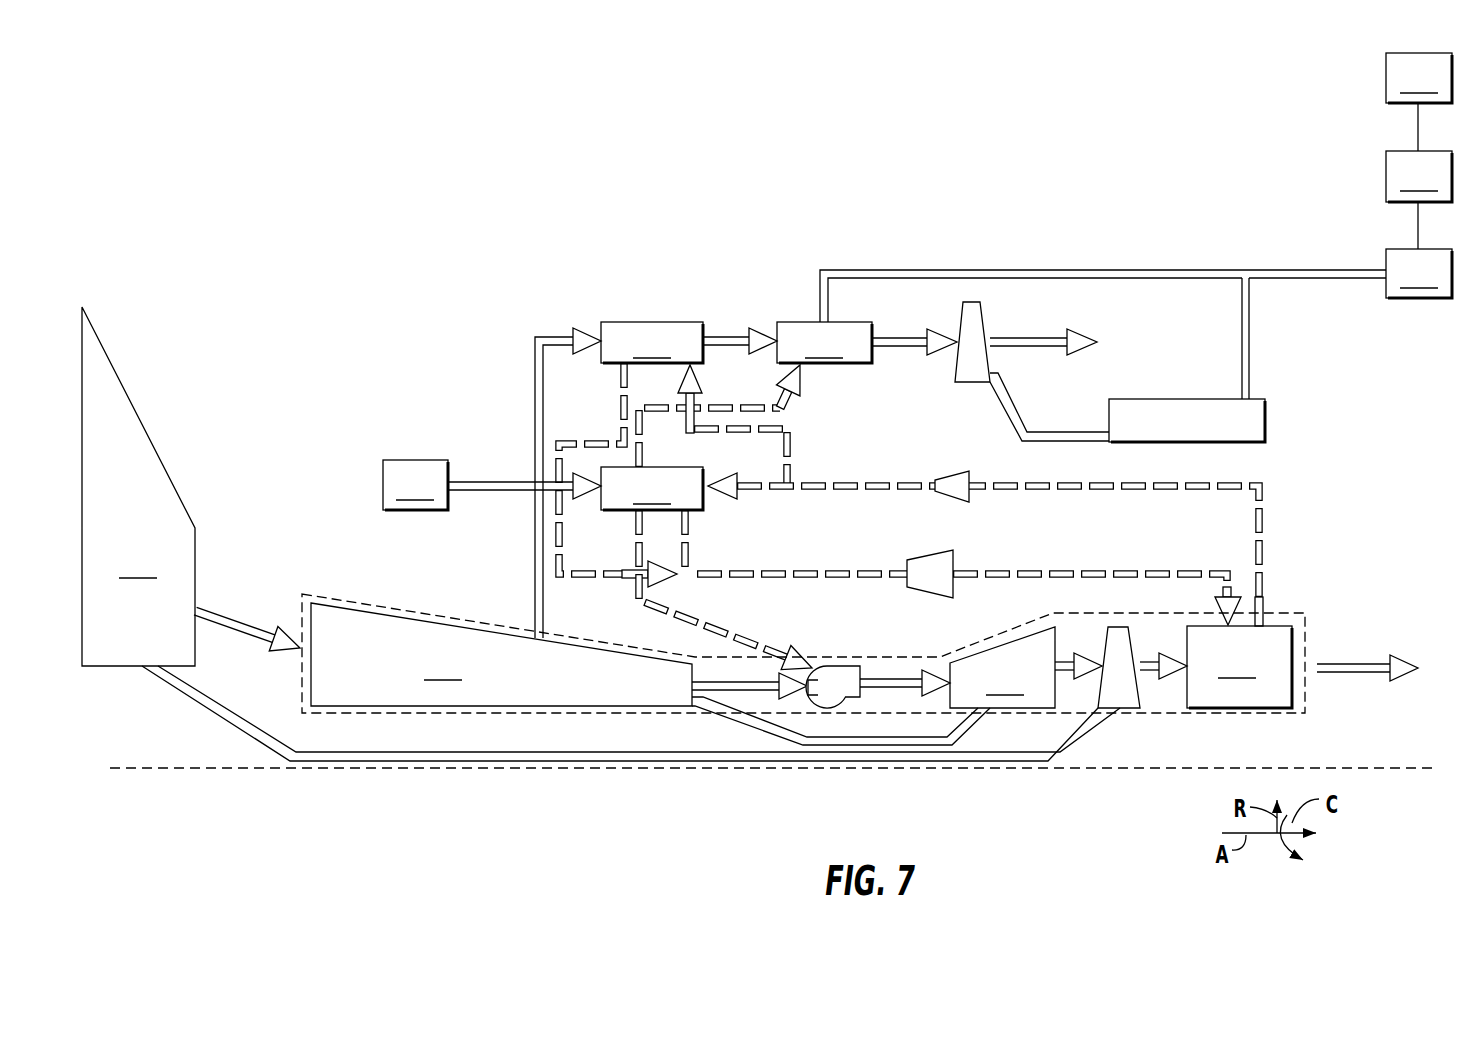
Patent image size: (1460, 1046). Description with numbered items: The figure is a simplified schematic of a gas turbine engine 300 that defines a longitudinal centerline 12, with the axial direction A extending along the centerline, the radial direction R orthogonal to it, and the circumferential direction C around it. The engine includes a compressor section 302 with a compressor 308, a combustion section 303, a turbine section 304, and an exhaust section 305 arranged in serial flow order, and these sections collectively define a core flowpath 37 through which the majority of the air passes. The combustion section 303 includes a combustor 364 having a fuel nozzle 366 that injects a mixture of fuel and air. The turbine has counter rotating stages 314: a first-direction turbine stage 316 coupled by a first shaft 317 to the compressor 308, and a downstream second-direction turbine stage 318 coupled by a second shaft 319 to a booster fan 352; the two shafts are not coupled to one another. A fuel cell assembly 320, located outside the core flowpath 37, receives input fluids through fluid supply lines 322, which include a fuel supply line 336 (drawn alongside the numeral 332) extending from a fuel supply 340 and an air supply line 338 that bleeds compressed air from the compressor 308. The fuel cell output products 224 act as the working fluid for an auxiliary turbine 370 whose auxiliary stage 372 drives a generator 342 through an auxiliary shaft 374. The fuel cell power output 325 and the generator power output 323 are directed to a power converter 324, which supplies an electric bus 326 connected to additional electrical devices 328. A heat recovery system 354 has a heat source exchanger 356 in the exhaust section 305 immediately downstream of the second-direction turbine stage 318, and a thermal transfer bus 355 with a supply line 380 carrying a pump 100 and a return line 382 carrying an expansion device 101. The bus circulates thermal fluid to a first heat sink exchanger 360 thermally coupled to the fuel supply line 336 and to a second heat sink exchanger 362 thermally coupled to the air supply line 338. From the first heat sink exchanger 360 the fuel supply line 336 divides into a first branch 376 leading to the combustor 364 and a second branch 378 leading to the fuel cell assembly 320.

The longitudinal centerline 12 is at (197, 770).
The core flowpath 37 is at (338, 597).
The pump 100 is at (955, 472).
The expansion device 101 is at (930, 559).
The output products 224 is at (897, 350).
The gas turbine engine 300 is at (1153, 82).
The compressor section 302 is at (501, 613).
The combustion section 303 is at (838, 638).
The turbine section 304 is at (1085, 763).
The exhaust section 305 is at (1314, 686).
The compressor 308 is at (471, 600).
The counter rotating stages 314 is at (1021, 738).
The first-direction turbine stage 316 is at (981, 667).
The first shaft 317 is at (877, 746).
The second-direction turbine stage 318 is at (1123, 697).
The second shaft 319 is at (636, 761).
The fuel cell assembly 320 is at (824, 342).
The fluid supply lines 322 is at (513, 474).
The generator power output 323 is at (1249, 359).
The power converter 324 is at (1419, 273).
The fuel cell power output 325 is at (1037, 270).
The electric bus 326 is at (1419, 200).
The additional electrical devices 328 is at (1419, 102).
The fuel supply line 332 is at (513, 456).
The fuel supply line 336 is at (496, 485).
The air supply line 338 is at (533, 378).
The fuel supply 340 is at (415, 485).
The generator 342 is at (1265, 425).
The booster fan 352 is at (193, 486).
The heat recovery system 354 is at (833, 450).
The thermal transfer bus 355 is at (1286, 545).
The heat source exchanger 356 is at (1239, 667).
The first heat sink exchanger 360 is at (652, 488).
The second heat sink exchanger 362 is at (689, 342).
The combustor 364 is at (776, 744).
The fuel nozzle 366 is at (805, 693).
The auxiliary turbine 370 is at (1007, 301).
The auxiliary stage 372 is at (978, 325).
The auxiliary shaft 374 is at (1018, 412).
The first branch 376 is at (728, 636).
The second branch 378 is at (705, 402).
The supply line 380 is at (1113, 490).
The return line 382 is at (1000, 571).